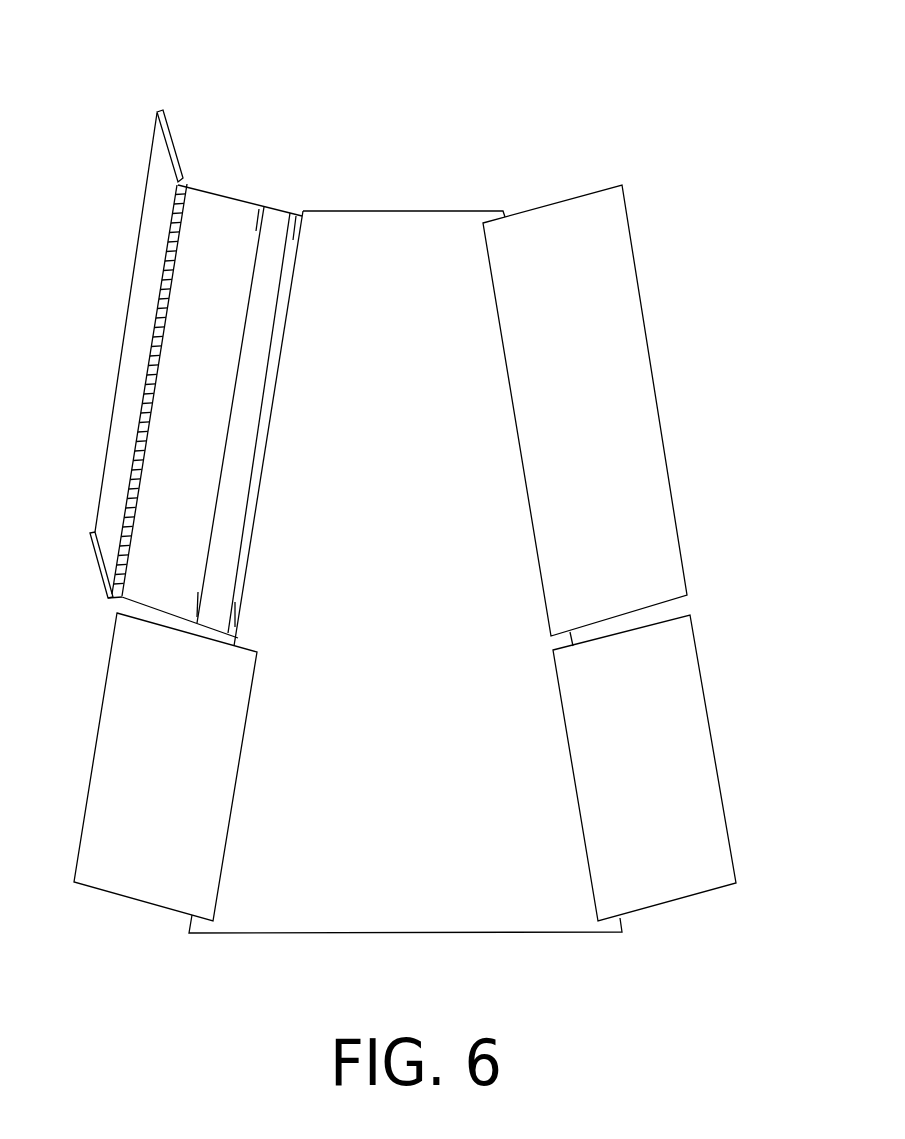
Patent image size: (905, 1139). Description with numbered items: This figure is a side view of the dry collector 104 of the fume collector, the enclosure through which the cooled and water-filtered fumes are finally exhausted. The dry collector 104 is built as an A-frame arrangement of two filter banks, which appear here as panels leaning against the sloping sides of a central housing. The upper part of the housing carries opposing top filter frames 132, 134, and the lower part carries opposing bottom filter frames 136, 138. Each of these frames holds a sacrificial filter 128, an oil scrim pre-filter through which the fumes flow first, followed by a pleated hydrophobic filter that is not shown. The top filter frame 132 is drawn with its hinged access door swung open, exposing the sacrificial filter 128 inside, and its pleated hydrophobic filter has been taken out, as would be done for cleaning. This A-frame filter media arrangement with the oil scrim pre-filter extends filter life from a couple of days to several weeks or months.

The dry collector 104 is at (750, 421).
The sacrificial oil scrim pre-filter 128 is at (271, 252).
The top filter frame 132 is at (172, 148).
The top filter frame 134 is at (580, 253).
The bottom filter frame 136 is at (123, 877).
The bottom filter frame 138 is at (652, 889).